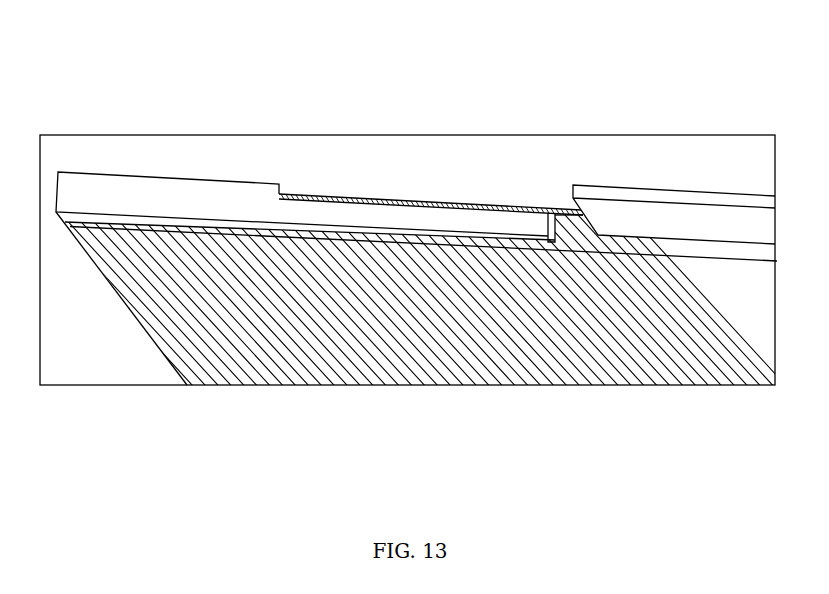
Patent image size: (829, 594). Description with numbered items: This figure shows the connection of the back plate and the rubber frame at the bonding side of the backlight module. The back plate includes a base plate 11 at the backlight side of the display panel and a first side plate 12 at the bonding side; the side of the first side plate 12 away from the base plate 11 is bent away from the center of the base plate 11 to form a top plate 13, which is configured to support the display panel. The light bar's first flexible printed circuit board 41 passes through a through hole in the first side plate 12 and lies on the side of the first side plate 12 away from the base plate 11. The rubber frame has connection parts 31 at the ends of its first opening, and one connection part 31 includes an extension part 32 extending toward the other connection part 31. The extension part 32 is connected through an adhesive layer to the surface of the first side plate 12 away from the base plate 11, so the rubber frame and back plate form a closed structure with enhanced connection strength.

The base plate 11 is at (147, 305).
The first side plate 12 is at (570, 240).
The top plate 13 is at (500, 203).
The connection part 31 is at (168, 185).
The extension part 32 is at (348, 214).
The first flexible printed circuit board 41 is at (727, 205).